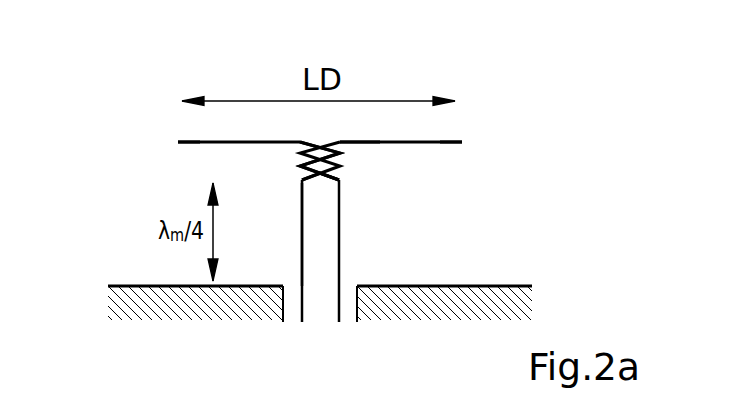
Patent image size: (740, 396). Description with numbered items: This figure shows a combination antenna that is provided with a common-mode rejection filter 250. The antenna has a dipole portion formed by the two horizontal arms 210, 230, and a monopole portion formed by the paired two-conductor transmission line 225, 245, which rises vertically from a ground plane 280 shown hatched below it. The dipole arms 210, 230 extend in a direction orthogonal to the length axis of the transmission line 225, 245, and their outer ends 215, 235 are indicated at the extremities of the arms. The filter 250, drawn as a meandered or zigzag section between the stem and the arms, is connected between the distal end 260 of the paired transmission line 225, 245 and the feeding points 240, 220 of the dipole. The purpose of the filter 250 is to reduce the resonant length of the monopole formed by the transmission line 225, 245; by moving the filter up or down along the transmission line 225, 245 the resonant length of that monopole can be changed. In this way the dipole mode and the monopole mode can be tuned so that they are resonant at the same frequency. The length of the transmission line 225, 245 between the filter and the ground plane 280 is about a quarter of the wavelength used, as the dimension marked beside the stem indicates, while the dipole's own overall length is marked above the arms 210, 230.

The dipole portion 210 is at (420, 142).
The end of first radiating arm 215 is at (460, 145).
The dipole feeding point 220 is at (355, 145).
The transmission line conductor 225 is at (340, 250).
The dipole portion 230 is at (240, 142).
The end of second radiating arm 235 is at (177, 145).
The dipole feeding point 240 is at (292, 141).
The transmission line conductor 245 is at (301, 225).
The common-mode rejection filter 250 is at (290, 148).
The distal end of the paired transmission line 260 is at (321, 182).
The ground plane 280 is at (490, 286).